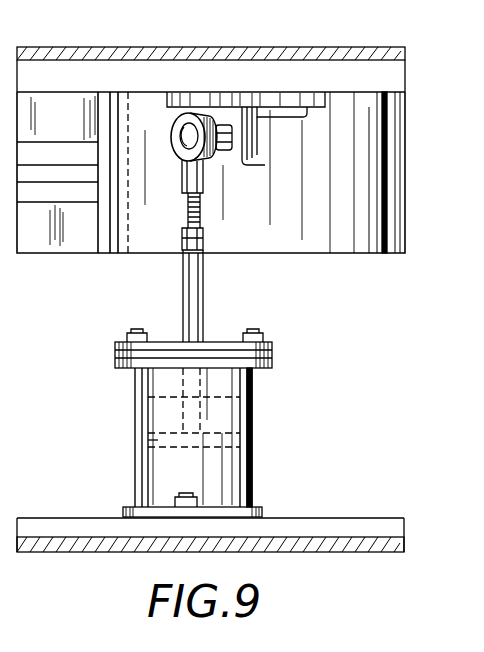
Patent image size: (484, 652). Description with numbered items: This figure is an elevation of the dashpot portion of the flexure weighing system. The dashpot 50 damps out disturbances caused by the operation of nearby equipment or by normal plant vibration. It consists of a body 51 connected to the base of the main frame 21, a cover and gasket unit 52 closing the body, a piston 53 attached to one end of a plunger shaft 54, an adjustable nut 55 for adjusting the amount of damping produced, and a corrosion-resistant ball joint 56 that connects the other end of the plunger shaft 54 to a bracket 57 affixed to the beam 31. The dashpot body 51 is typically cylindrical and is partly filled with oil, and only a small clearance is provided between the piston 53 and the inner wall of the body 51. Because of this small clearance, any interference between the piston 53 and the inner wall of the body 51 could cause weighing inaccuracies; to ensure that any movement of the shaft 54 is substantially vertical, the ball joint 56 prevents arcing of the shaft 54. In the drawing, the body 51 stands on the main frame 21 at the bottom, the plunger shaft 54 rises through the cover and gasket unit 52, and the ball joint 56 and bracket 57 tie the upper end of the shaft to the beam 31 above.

The main frame 21 is at (297, 552).
The beam 31 is at (233, 47).
The dashpot 50 is at (368, 328).
The body 51 is at (252, 477).
The cover and gasket unit 52 is at (272, 362).
The piston 53 is at (147, 443).
The plunger shaft 54 is at (205, 418).
The adjustable nut 55 is at (188, 202).
The ball joint 56 is at (186, 145).
The bracket 57 is at (258, 137).